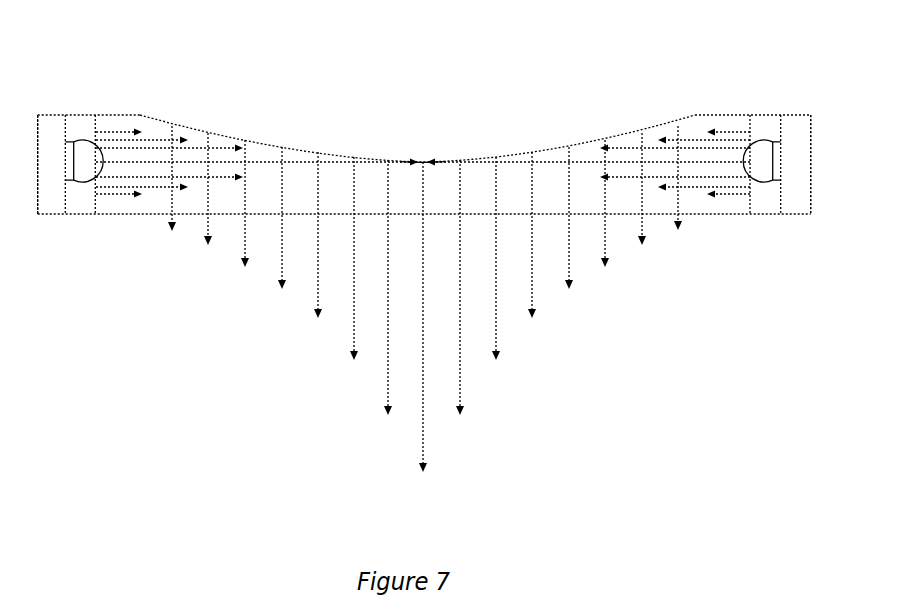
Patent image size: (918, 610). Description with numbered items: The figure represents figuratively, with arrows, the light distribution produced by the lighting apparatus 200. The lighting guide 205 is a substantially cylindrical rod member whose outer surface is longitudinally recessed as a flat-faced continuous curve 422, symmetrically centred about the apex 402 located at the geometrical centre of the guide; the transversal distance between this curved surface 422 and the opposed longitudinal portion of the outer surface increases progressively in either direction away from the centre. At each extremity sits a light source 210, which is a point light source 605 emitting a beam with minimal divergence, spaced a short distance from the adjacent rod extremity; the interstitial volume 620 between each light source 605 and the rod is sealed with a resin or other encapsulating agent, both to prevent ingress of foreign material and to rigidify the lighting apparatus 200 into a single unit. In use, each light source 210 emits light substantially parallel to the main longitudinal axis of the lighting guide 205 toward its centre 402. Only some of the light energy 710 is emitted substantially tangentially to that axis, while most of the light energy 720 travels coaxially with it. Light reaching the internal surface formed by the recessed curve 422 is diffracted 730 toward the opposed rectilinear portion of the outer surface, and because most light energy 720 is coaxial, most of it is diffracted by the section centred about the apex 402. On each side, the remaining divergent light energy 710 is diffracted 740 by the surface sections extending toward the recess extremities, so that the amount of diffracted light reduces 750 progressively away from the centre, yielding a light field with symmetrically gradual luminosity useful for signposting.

The lighting apparatus 200 is at (168, 58).
The lighting guide 205 is at (698, 207).
The light source 210 is at (47, 205).
The apex 402 is at (423, 163).
The recessed portion 422 is at (304, 140).
The point light source 605 is at (80, 150).
The interstitial volume 620 is at (77, 198).
The tangential light energy 710 is at (128, 188).
The coaxial light energy 720 is at (548, 163).
The diffracted light 730 is at (425, 436).
The diffracted divergent light 740 is at (538, 307).
The reduced diffracted light 750 is at (317, 305).